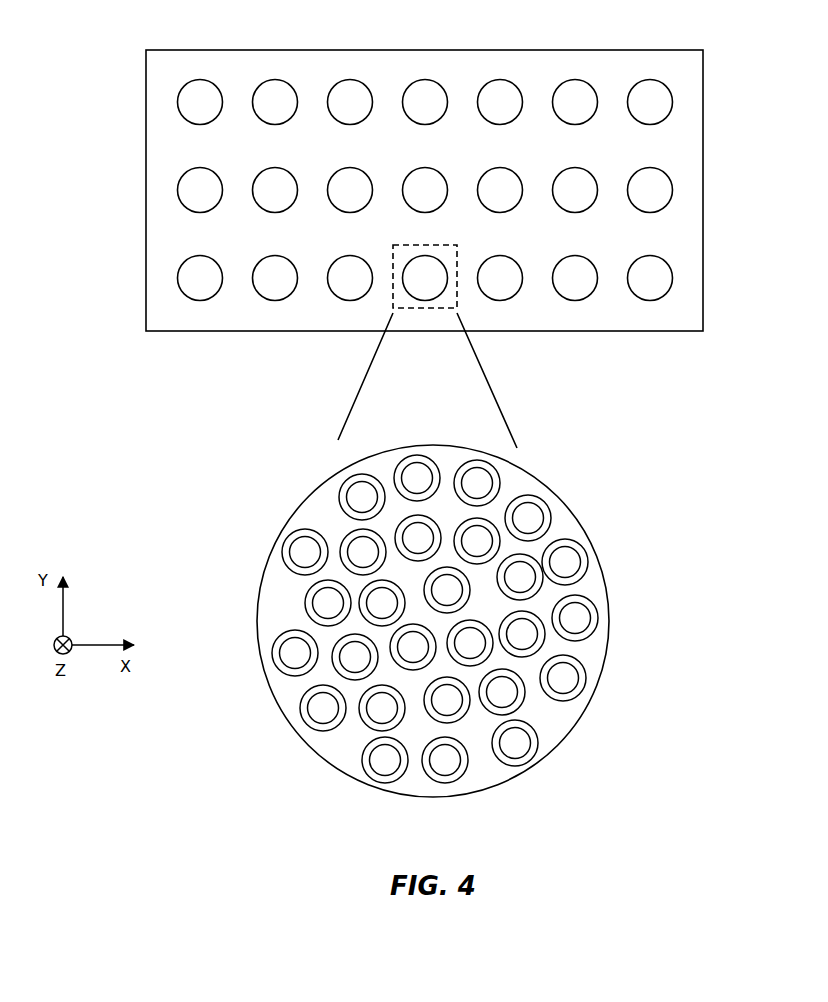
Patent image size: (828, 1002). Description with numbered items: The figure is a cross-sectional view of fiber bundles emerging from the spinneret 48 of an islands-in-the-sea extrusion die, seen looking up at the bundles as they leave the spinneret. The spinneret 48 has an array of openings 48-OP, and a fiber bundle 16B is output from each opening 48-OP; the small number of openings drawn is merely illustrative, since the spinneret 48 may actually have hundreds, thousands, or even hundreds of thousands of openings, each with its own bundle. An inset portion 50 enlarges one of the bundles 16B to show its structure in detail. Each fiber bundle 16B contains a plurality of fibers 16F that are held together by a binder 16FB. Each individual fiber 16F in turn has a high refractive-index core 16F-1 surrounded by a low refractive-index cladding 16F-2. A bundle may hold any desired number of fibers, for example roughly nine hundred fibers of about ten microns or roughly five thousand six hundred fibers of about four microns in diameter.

The spinneret 48 is at (617, 63).
The openings 48-OP is at (274, 79).
The fiber bundles 16B is at (480, 399).
The inset portion 50 is at (432, 245).
The fibers 16F is at (282, 618).
The binder 16FB is at (558, 523).
The high refractive-index core 16F-1 is at (518, 742).
The low refractive-index cladding 16F-2 is at (583, 568).